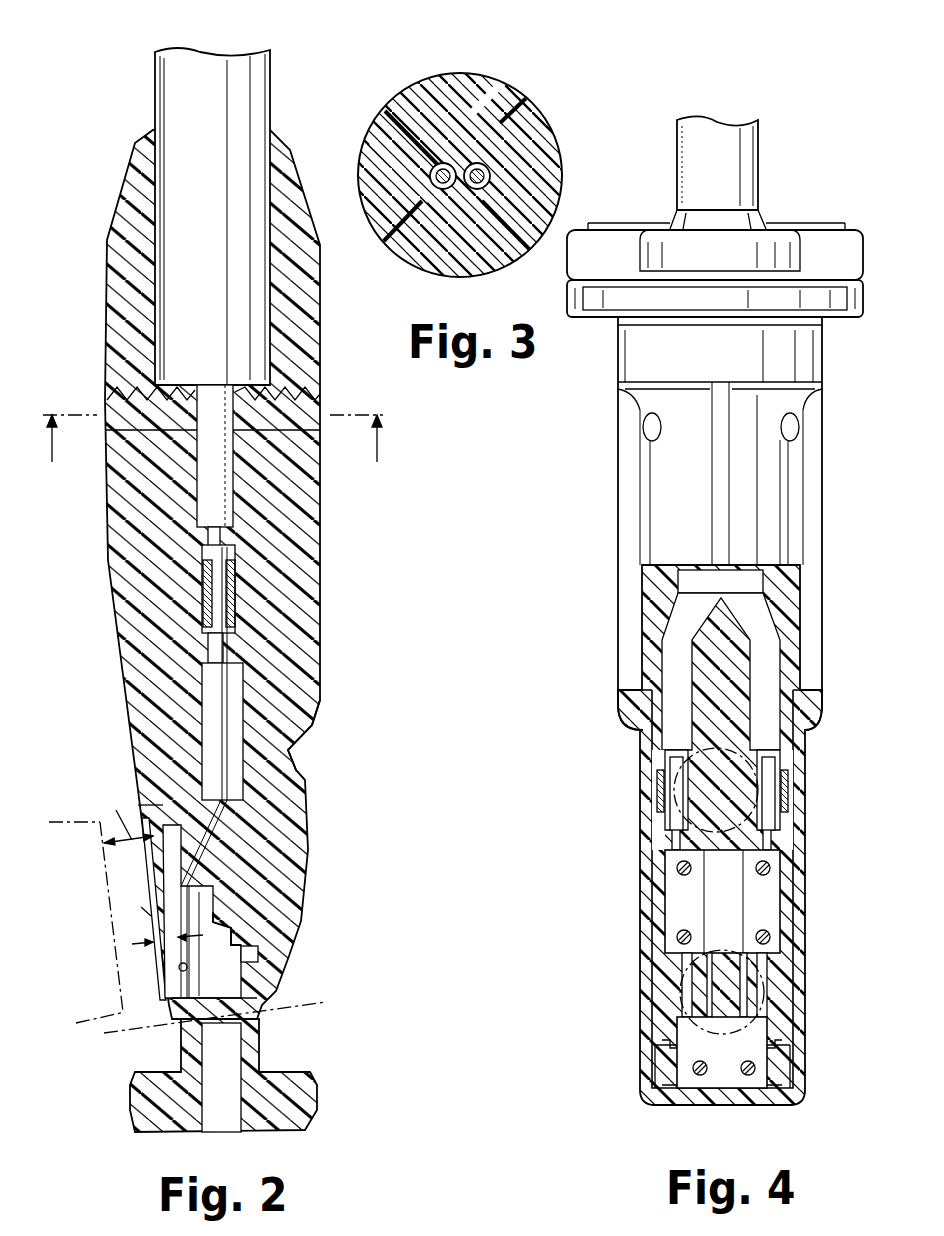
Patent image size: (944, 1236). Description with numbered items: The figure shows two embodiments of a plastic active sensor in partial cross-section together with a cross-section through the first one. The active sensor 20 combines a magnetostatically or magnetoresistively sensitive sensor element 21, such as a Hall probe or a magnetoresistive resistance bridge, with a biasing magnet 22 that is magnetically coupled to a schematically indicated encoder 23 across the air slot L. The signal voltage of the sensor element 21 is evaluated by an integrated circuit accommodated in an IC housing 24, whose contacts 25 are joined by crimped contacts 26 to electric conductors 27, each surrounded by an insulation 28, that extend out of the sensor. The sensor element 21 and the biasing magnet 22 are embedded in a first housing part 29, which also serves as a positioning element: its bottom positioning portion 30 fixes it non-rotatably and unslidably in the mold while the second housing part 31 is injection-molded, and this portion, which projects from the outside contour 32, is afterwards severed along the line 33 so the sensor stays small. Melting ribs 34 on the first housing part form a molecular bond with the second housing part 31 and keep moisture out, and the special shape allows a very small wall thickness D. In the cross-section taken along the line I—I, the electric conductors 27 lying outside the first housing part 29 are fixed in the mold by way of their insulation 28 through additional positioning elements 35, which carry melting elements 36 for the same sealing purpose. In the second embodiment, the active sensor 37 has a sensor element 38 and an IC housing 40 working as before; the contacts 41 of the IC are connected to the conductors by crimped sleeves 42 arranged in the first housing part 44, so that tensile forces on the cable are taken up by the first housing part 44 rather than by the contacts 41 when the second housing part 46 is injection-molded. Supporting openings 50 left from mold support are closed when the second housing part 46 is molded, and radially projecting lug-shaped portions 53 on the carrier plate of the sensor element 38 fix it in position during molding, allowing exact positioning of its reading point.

In FIG. 2, the active sensor 20 is at (236, 594).
In FIG. 2, the sensor element 21 is at (199, 917).
In FIG. 2, the biasing magnet 22 is at (225, 940).
In FIG. 2, the encoder 23 is at (62, 941).
In FIG. 2, the IC housing 24 is at (235, 722).
In FIG. 2, the contacts 25 is at (225, 645).
In FIG. 2, the crimped contacts 26 is at (237, 582).
In FIG. 2, the electric conductors 27 is at (216, 540).
In FIG. 3, the electric conductors 27 is at (455, 160).
In FIG. 2, the insulation 28 is at (208, 489).
In FIG. 3, the insulation 28 is at (450, 158).
In FIG. 2, the first housing part 29 is at (241, 998).
In FIG. 2, the positioning portion 30 is at (305, 1104).
In FIG. 2, the second housing part 31 is at (130, 550).
In FIG. 2, the outside contour 32 is at (303, 831).
In FIG. 2, the line 33 is at (276, 1009).
In FIG. 2, the melting ribs 34 is at (259, 952).
In FIG. 3, the additional positioning elements 35 is at (515, 115).
In FIG. 3, the melting elements 36 is at (545, 124).
In FIG. 4, the active sensor 37 is at (727, 610).
In FIG. 4, the sensor element 38 is at (747, 1027).
In FIG. 4, the IC housing 40 is at (683, 906).
In FIG. 4, the contacts 41 is at (783, 772).
In FIG. 4, the crimped sleeves 42 is at (787, 793).
In FIG. 4, the first housing part 44 is at (773, 967).
In FIG. 4, the second housing part 46 is at (800, 862).
In FIG. 4, the opening 50 is at (783, 1063).
In FIG. 4, the radially projecting portions 53 is at (670, 1072).